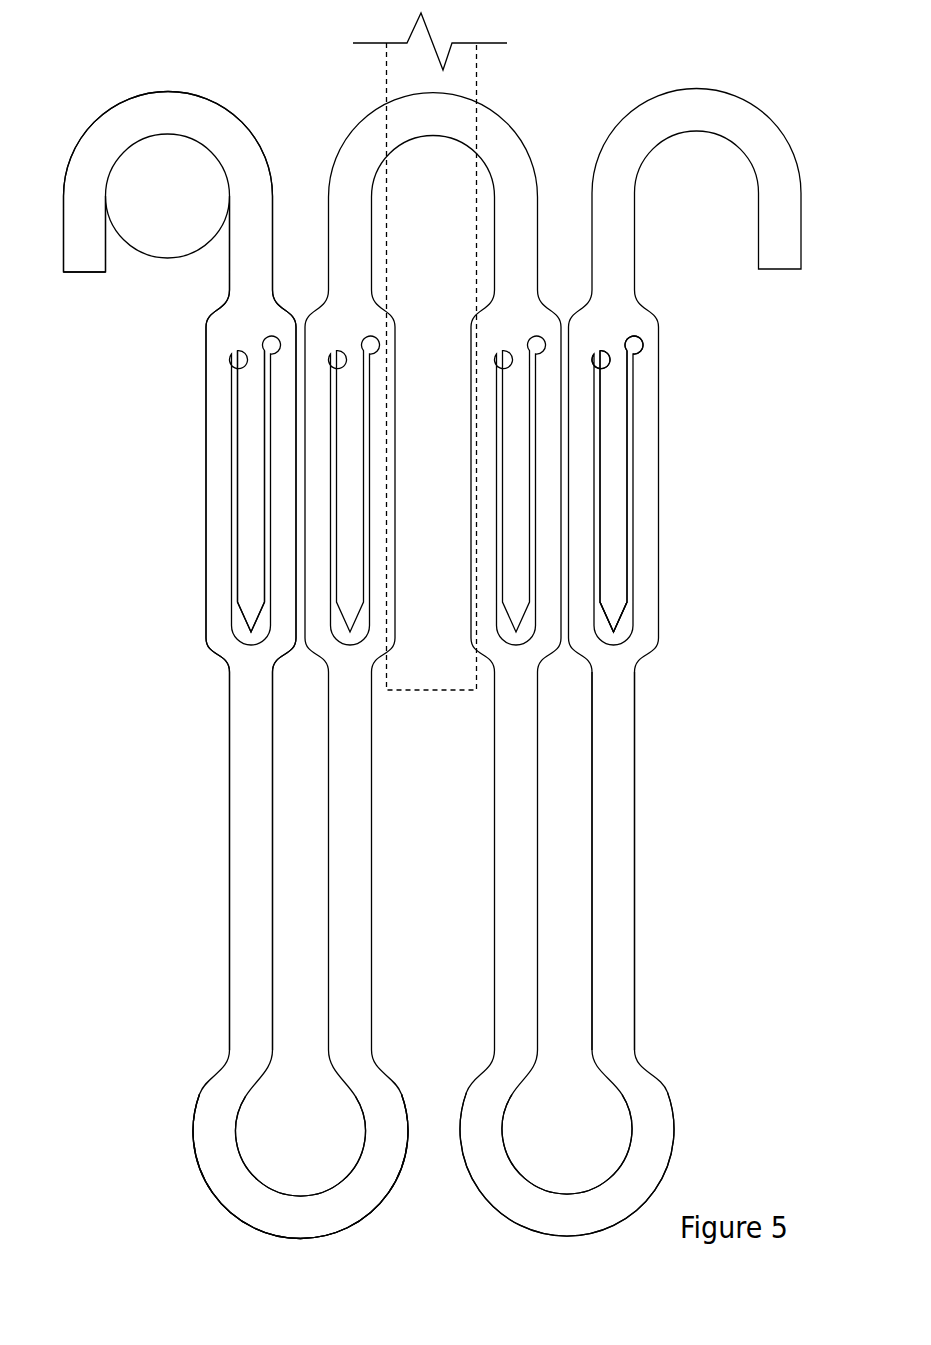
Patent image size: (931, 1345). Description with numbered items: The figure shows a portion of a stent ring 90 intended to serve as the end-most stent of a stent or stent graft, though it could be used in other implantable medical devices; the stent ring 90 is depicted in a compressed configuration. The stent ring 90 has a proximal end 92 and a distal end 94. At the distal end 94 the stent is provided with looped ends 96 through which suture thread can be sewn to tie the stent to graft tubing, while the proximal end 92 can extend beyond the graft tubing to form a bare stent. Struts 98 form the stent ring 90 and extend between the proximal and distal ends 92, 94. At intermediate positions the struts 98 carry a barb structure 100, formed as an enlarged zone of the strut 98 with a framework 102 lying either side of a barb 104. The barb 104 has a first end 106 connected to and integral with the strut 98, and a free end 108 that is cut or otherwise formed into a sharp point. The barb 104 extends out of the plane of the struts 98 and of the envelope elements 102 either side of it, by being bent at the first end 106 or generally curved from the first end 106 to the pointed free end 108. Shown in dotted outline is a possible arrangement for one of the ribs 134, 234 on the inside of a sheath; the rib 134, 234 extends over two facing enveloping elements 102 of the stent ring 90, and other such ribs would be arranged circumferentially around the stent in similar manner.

The stent ring 90 is at (578, 80).
The proximal end 92 is at (128, 82).
The distal end 94 is at (127, 1172).
The looped end 96 is at (284, 1137).
The strut 98 is at (247, 912).
The barb structure 100 is at (202, 617).
The framework 102 is at (222, 540).
The barb 104 is at (250, 510).
The first end 106 is at (617, 345).
The free end 108 is at (618, 614).
The rib 134 is at (368, 366).
The rib 234 is at (393, 76).